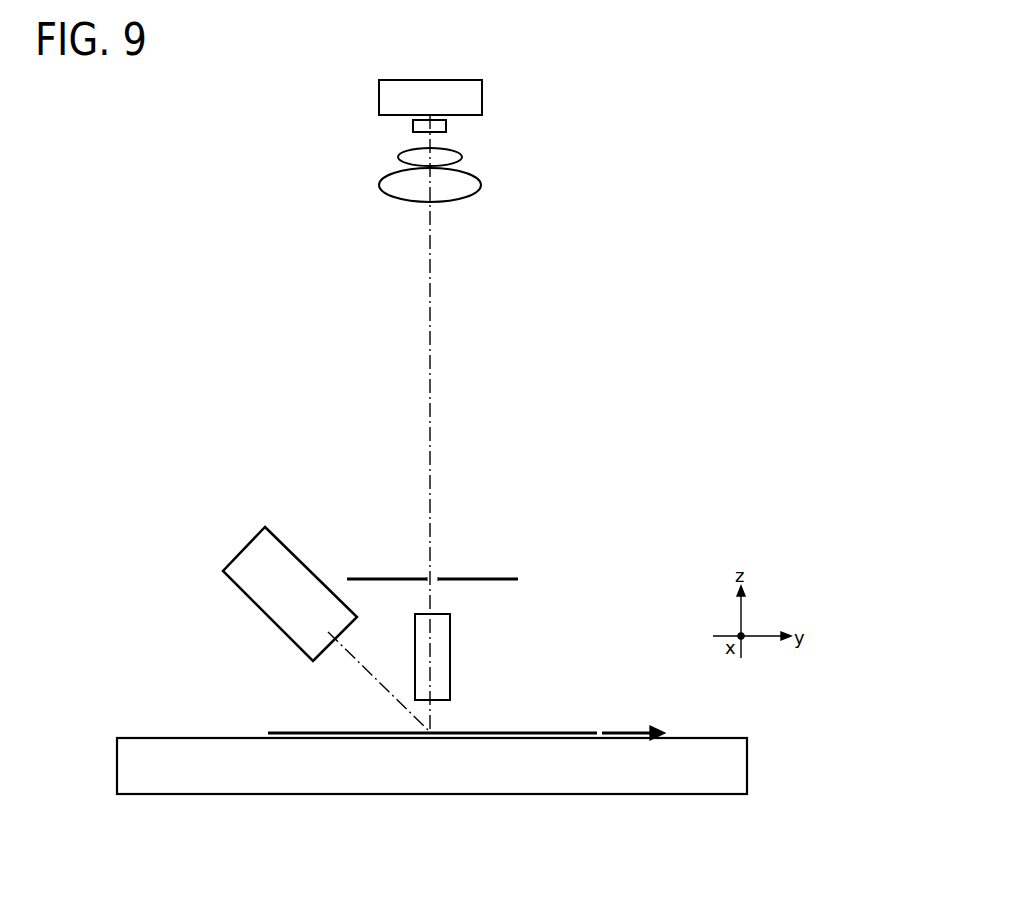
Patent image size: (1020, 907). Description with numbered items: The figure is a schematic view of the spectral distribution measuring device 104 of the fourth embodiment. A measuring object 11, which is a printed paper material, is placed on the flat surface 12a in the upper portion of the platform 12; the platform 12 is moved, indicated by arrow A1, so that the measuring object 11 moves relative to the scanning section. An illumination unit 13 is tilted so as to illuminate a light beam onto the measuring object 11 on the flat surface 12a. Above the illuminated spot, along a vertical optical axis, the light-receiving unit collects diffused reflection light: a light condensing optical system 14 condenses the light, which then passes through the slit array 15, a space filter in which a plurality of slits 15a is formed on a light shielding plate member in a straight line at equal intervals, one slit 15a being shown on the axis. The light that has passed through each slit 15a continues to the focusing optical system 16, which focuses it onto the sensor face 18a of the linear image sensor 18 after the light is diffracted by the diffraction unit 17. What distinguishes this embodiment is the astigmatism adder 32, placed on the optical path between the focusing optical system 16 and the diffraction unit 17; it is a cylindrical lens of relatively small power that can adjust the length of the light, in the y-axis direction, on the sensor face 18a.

The spectral distribution measuring device 104 is at (192, 213).
The linear image sensor 18 is at (483, 76).
The sensor face 18a is at (388, 117).
The diffraction unit 17 is at (448, 135).
The astigmatism adder 32 is at (400, 160).
The focusing optical system 16 is at (475, 200).
The illumination unit 13 is at (280, 537).
The slit array 15 is at (495, 568).
The slit 15a is at (438, 577).
The light condensing optical system 14 is at (450, 656).
The measuring object 11 is at (546, 730).
The conveyance direction A1 is at (626, 730).
The flat surface 12a is at (698, 736).
The platform 12 is at (740, 763).